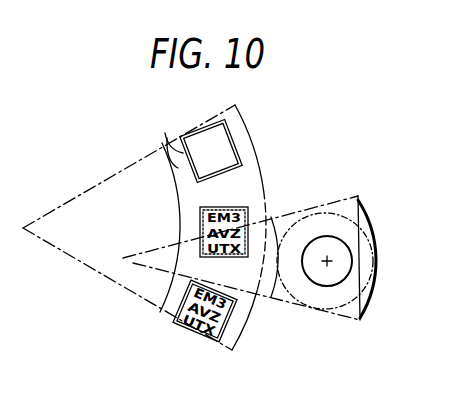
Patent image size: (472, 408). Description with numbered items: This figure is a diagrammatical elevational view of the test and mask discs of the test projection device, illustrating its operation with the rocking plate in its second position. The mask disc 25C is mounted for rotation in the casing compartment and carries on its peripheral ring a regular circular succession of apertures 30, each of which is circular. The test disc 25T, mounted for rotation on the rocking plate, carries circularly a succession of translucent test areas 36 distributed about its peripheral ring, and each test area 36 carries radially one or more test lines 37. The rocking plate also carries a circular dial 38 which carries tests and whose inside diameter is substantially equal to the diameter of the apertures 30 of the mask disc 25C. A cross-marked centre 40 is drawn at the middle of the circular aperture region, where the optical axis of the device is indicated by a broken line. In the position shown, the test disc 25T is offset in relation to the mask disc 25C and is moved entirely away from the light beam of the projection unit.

The test disc 25T is at (250, 143).
The mask disc 25C is at (351, 322).
The apertures 30 is at (318, 280).
The translucent test areas 36 is at (201, 129).
The test lines 37 is at (158, 143).
The circular dial 38 is at (371, 232).
The axis 40 is at (327, 255).